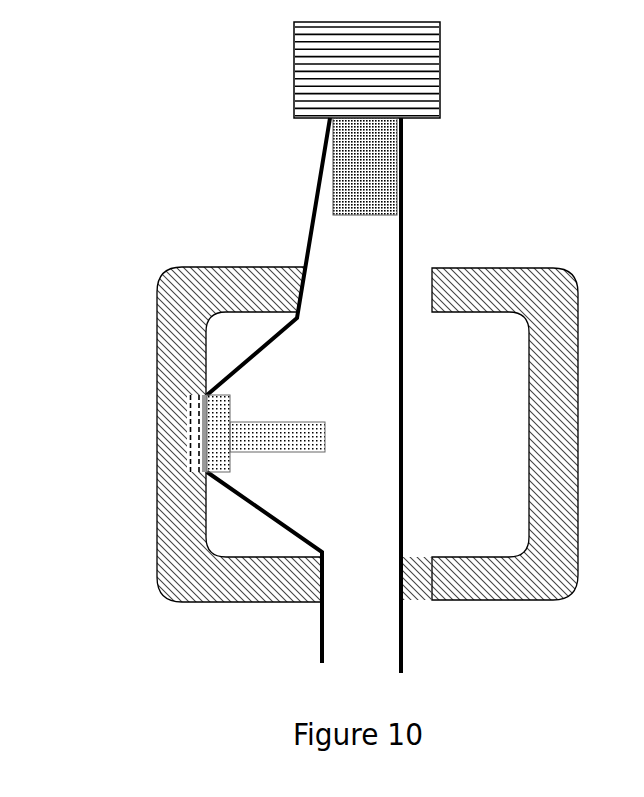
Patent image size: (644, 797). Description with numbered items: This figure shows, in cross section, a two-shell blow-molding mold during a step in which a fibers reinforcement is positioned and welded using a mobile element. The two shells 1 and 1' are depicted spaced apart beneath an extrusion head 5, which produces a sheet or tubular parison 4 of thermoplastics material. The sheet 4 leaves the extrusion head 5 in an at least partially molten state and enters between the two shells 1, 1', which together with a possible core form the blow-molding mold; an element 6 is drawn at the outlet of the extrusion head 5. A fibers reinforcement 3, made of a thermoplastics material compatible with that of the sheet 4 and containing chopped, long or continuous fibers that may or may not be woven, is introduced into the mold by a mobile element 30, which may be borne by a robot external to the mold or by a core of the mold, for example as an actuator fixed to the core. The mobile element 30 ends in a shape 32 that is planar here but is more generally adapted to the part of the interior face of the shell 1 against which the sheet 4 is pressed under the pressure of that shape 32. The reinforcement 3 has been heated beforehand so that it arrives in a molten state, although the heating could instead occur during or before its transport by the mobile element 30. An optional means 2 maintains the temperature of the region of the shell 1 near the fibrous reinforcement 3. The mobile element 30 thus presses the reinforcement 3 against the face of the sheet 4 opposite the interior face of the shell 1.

The shell 1 is at (207, 434).
The shell 1' is at (505, 383).
The optional means 2 is at (186, 446).
The fibers reinforcement 3 is at (202, 429).
The sheet or tubular parison 4 is at (413, 256).
The extrusion head 5 is at (292, 162).
The spacer block 6 is at (347, 173).
The mobile element 30 is at (276, 441).
The shape 32 is at (229, 403).